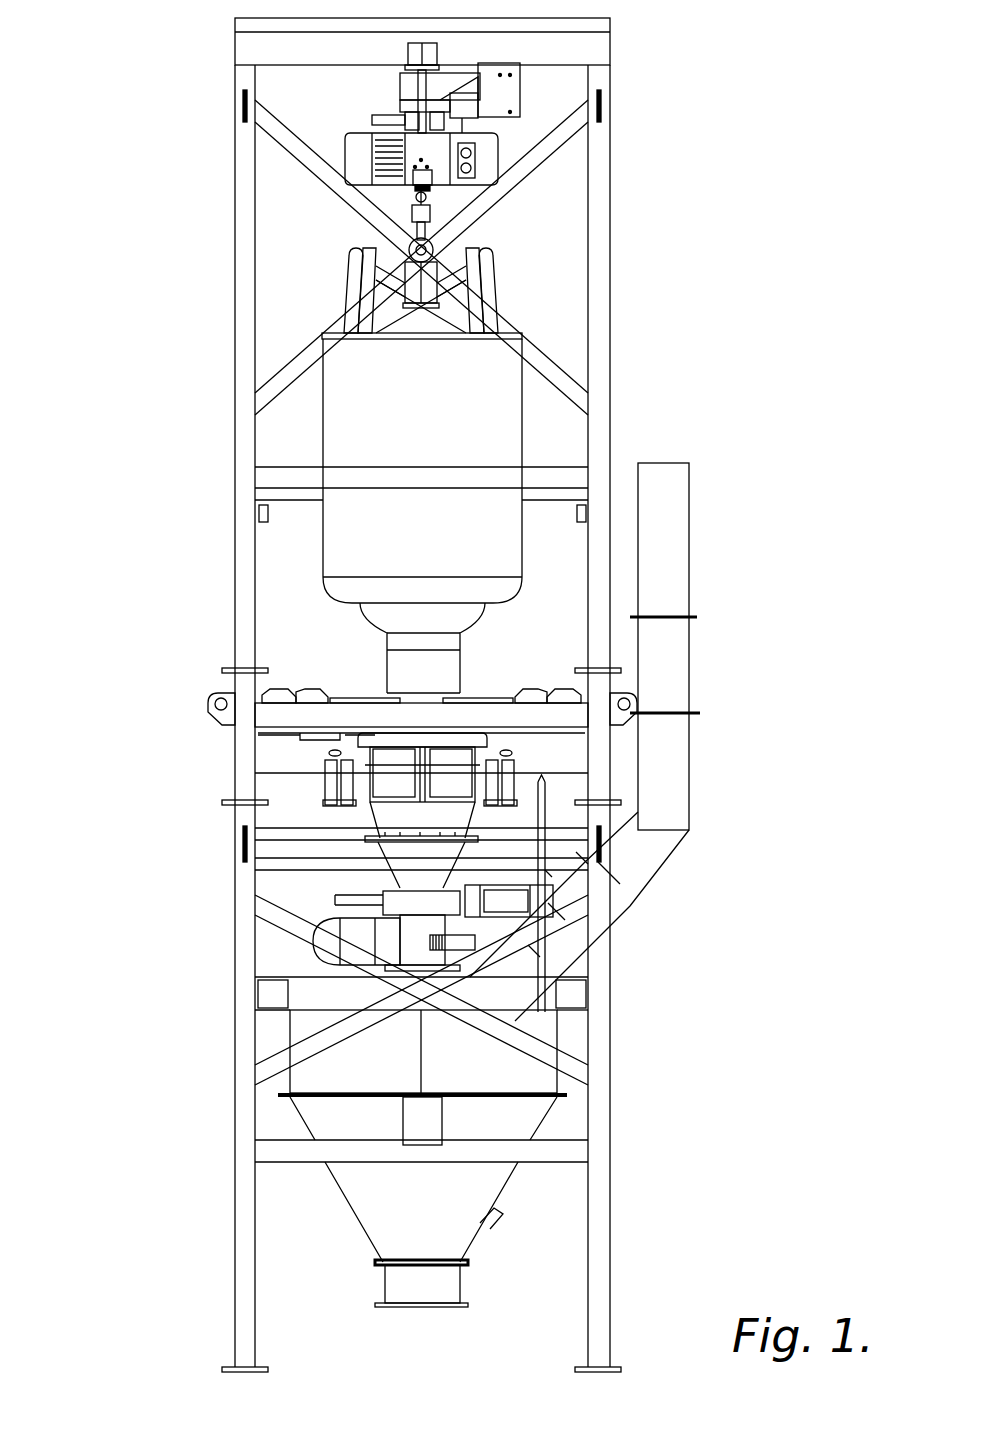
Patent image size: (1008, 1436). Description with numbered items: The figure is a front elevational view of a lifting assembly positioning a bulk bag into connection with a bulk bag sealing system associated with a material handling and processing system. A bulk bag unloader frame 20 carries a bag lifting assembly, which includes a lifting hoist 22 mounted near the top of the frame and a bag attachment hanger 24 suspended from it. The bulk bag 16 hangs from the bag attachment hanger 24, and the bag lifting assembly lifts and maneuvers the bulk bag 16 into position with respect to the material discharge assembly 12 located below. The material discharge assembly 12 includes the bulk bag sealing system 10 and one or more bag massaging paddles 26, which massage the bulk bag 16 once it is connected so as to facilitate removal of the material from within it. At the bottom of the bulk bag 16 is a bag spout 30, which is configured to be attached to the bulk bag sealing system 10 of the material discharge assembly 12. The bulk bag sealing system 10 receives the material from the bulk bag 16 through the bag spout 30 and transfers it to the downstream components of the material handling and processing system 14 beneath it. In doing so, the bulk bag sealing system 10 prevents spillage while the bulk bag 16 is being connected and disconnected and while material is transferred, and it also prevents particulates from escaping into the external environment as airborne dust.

The bulk bag unloader frame 20 is at (160, 33).
The lifting hoist 22 is at (362, 147).
The bag attachment hanger 24 is at (357, 287).
The bulk bag 16 is at (338, 425).
The bag spout 30 is at (405, 660).
The bag massaging paddles 26 is at (300, 698).
The material discharge assembly 12 is at (208, 742).
The bulk bag sealing system 10 is at (390, 807).
The material handling and processing system 14 is at (205, 1108).